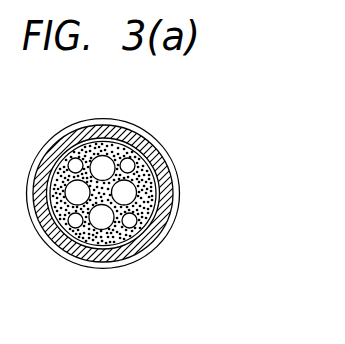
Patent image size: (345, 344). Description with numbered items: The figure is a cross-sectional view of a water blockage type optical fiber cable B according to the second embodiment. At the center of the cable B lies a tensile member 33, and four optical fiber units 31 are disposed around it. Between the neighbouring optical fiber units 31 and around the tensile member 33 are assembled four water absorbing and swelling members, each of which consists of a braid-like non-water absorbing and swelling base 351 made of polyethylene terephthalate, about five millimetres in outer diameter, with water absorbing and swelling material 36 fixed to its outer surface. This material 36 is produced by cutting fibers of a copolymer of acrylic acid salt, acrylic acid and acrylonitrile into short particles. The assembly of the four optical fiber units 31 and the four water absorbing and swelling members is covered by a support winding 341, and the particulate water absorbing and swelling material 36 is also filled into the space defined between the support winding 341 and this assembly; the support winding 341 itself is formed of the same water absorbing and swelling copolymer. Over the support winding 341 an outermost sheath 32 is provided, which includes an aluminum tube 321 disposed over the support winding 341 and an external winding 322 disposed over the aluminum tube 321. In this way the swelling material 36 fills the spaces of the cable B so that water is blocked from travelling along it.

The water blockage type optical fiber cable B is at (70, 110).
The optical fiber unit 31 is at (103, 163).
The outermost sheath 32 is at (143, 215).
The aluminum tube 321 is at (143, 238).
The external winding 322 is at (120, 264).
The tensile member 33 is at (112, 193).
The support winding 341 is at (157, 206).
The braid-like non-water absorbing and swelling base 351 is at (128, 164).
The water absorbing and swelling material 36 is at (148, 174).